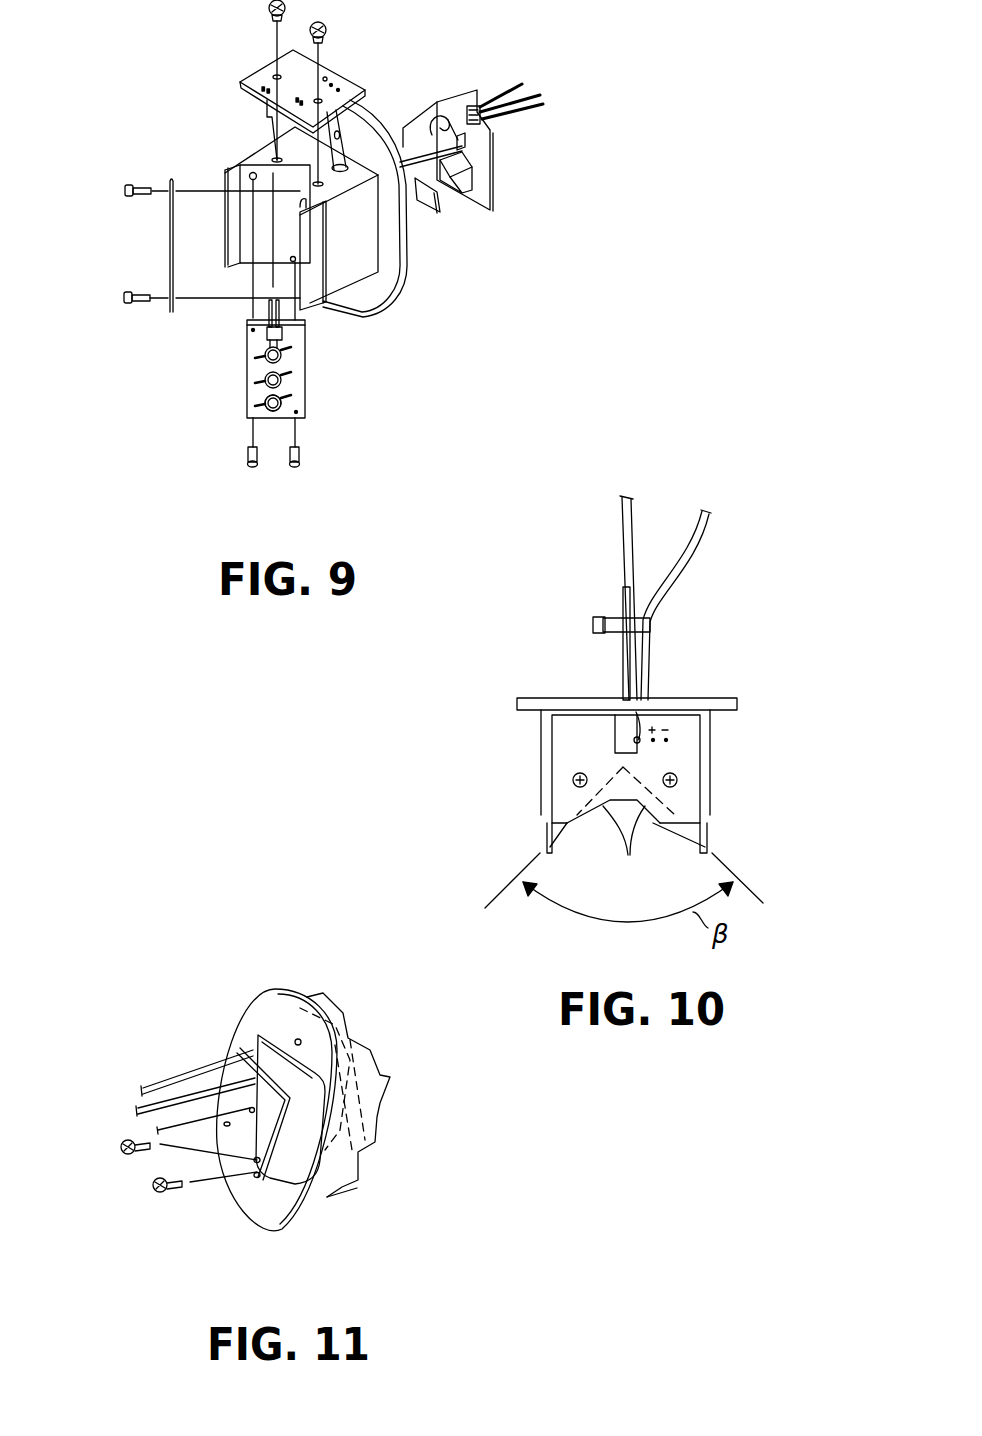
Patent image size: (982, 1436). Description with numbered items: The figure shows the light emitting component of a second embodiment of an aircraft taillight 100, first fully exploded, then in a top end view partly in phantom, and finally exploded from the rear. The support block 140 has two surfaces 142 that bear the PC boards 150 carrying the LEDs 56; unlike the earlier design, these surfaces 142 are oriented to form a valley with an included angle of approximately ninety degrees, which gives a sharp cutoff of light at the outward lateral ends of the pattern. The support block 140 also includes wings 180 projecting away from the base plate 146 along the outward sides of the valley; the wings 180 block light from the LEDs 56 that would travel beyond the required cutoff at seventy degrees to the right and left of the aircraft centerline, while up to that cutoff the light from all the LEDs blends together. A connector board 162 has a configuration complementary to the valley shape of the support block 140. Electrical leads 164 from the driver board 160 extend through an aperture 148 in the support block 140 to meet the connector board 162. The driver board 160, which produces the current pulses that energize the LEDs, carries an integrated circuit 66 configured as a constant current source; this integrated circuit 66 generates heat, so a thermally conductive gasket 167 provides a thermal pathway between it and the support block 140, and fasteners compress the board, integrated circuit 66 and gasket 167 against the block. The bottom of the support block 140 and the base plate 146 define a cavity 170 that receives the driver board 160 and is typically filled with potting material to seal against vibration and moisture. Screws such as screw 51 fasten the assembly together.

In FIG. 9, the taillight 100 is at (168, 108).
In FIG. 9, the connector board 162 is at (247, 84).
In FIG. 10, the connector board 162 is at (690, 762).
In FIG. 9, the aperture 148 is at (345, 167).
In FIG. 9, the surfaces 142 is at (263, 175).
In FIG. 10, the surfaces 142 is at (625, 847).
In FIG. 9, the wings 180 is at (224, 224).
In FIG. 10, the wings 180 is at (548, 843).
In FIG. 9, the PC boards 150 is at (170, 312).
In FIG. 9, the support block 140 is at (345, 273).
In FIG. 10, the support block 140 is at (540, 792).
In FIG. 9, the base plate 146 is at (405, 293).
In FIG. 10, the base plate 146 is at (653, 698).
In FIG. 11, the base plate 146 is at (275, 1000).
In FIG. 9, the electrical leads 164 is at (485, 124).
In FIG. 9, the driver board 160 is at (494, 174).
In FIG. 11, the driver board 160 is at (300, 1220).
In FIG. 9, the integrated circuit 66 is at (457, 197).
In FIG. 9, the thermally conductive gasket 167 is at (440, 213).
In FIG. 11, the thermally conductive gasket 167 is at (323, 1063).
In FIG. 9, the screw 51 is at (247, 463).
In FIG. 9, the LEDs 56 is at (273, 413).
In FIG. 11, the cavity 170 is at (363, 1110).